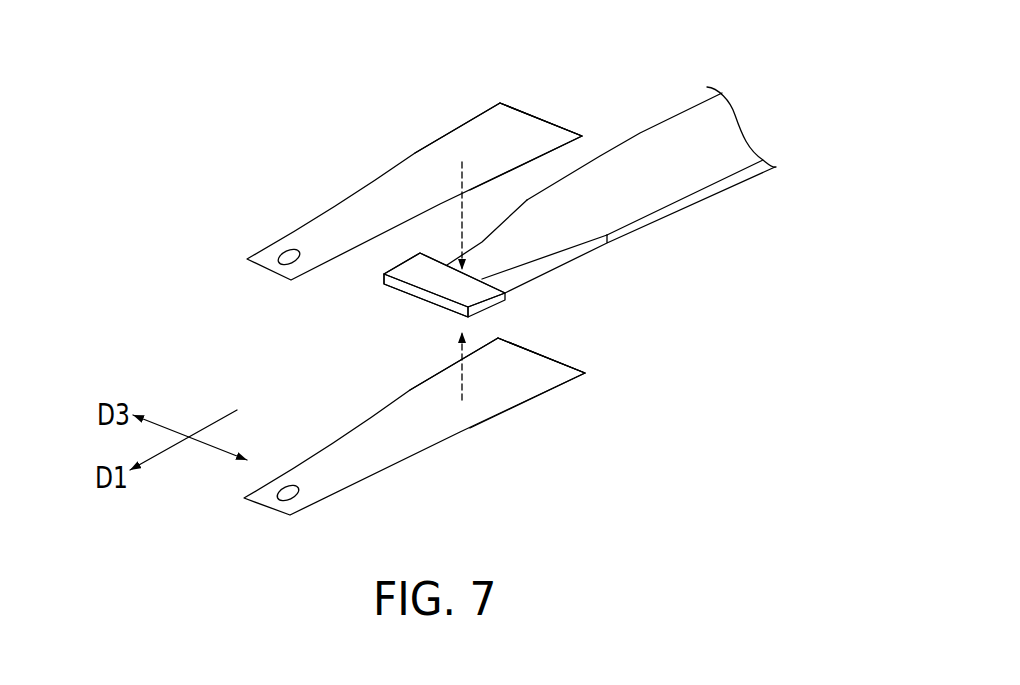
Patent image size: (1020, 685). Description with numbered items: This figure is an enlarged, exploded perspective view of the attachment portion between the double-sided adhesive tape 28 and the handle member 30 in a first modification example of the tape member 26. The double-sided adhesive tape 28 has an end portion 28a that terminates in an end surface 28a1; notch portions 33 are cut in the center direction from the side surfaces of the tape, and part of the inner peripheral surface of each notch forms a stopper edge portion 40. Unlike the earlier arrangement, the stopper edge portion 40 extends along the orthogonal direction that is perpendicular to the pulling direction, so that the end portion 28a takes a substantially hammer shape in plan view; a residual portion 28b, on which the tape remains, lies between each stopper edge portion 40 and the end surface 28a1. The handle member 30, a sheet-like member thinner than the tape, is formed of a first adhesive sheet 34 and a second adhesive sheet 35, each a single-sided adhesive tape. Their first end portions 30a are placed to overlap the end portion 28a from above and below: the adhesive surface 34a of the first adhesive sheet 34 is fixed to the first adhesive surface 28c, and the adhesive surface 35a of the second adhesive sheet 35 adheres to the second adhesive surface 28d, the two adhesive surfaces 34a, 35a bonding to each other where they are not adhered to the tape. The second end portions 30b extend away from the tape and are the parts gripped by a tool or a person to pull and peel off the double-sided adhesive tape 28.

The tape member 26 is at (152, 26).
The double-sided adhesive tape 28 is at (727, 184).
The end portion 28a is at (436, 296).
The end surface 28a1 is at (398, 292).
The residual portion 28b is at (417, 270).
The first adhesive surface 28c is at (677, 158).
The second adhesive surface 28d is at (680, 208).
The handle member 30 is at (273, 230).
The first end portion 30a is at (463, 147).
The second end portion 30b is at (271, 259).
The notch portion 33 is at (478, 233).
The first adhesive sheet 34 is at (337, 229).
The adhesive surface 34a is at (550, 158).
The second adhesive sheet 35 is at (397, 467).
The adhesive surface 35a is at (485, 398).
The stopper edge portion 40 is at (438, 257).